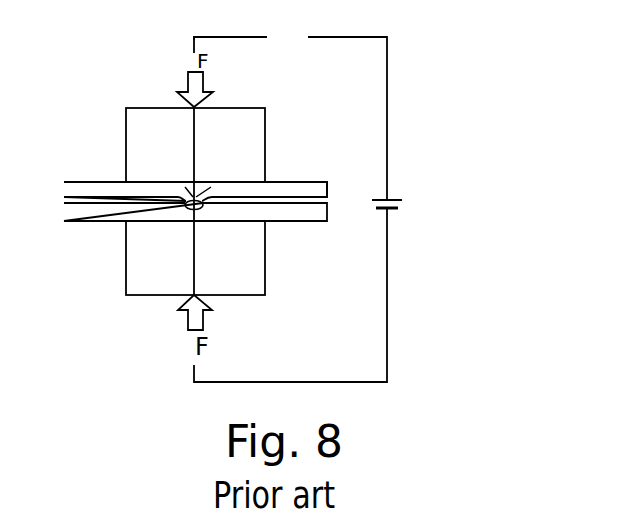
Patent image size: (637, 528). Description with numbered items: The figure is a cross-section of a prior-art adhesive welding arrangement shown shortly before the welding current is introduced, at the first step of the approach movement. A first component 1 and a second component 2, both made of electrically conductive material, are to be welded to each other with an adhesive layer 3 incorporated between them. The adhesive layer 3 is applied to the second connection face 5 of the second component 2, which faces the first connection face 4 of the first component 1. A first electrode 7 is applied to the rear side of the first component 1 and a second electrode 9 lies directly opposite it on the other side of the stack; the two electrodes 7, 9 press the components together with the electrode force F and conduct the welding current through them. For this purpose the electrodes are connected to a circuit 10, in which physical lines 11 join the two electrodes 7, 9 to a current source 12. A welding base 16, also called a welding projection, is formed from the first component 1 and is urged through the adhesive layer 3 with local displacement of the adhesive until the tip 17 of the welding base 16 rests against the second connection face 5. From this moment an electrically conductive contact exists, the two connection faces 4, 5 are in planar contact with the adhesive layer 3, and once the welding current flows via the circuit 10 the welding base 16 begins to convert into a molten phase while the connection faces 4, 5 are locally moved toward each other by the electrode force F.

The first component 1 is at (78, 185).
The second component 2 is at (82, 212).
The adhesive layer 3 is at (284, 206).
The first connection face 4 is at (308, 212).
The second connection face 5 is at (278, 184).
The first electrode 7 is at (148, 120).
The second electrode 9 is at (148, 275).
The circuit 10 is at (423, 70).
The physical lines 11 is at (287, 37).
The current source 12 is at (432, 203).
The welding base 16 is at (178, 186).
The tip 17 is at (205, 210).